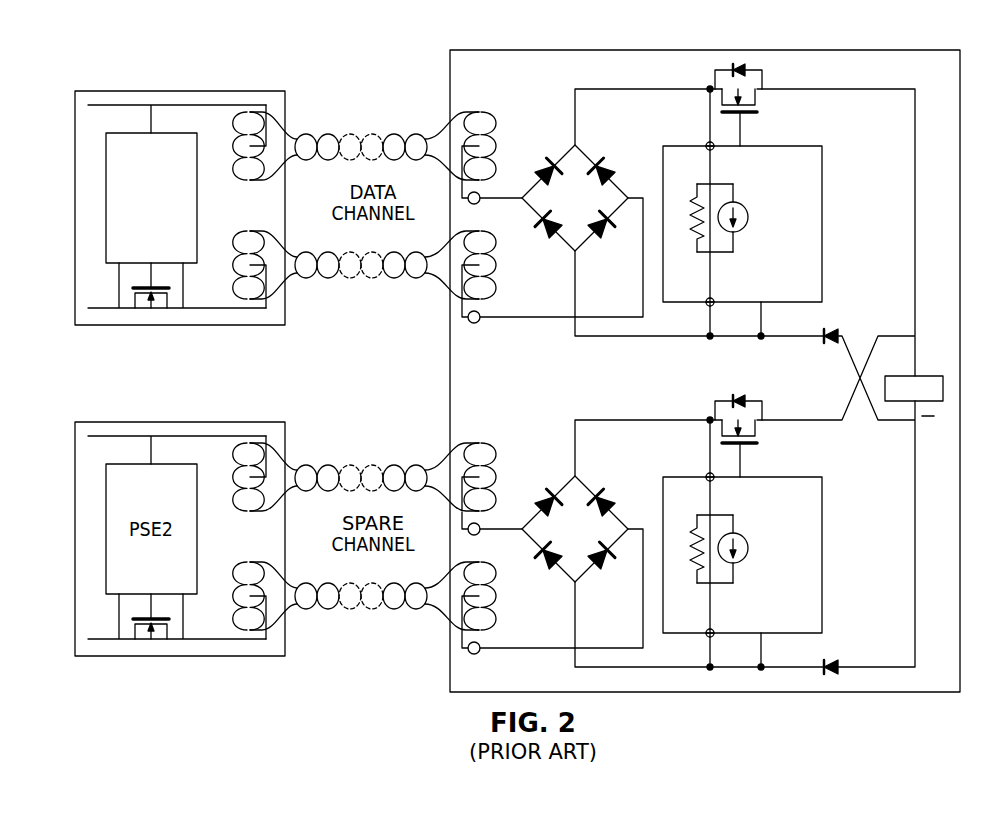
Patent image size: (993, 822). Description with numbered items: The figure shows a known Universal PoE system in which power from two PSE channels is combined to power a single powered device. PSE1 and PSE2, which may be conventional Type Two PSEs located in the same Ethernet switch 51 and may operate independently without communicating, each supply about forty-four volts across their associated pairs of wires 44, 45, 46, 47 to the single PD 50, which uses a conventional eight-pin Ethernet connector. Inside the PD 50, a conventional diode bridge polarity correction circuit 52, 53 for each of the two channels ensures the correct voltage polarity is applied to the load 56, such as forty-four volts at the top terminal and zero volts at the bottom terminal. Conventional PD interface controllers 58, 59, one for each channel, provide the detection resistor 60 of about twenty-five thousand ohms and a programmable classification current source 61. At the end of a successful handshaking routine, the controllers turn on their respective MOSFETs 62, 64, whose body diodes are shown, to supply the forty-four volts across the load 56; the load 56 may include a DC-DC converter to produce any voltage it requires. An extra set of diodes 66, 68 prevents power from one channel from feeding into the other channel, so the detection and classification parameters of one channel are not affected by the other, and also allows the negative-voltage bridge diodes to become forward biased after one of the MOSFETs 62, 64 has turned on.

The pair of wires 44 is at (361, 134).
The pair of wires 45 is at (393, 279).
The pair of wires 46 is at (364, 465).
The pair of wires 47 is at (397, 608).
The PD 50 is at (648, 50).
The Ethernet switch 51 is at (224, 91).
The diode bridge polarity correction circuit 52 is at (538, 135).
The diode bridge polarity correction circuit 53 is at (540, 466).
The load 56 is at (904, 376).
The PD interface controller 58 is at (764, 194).
The PD interface controller 59 is at (764, 525).
The detection resistor 60 is at (697, 200).
The programmable classification current source 61 is at (748, 219).
The MOSFET 62 is at (757, 102).
The MOSFET 64 is at (757, 433).
The diode 66 is at (833, 329).
The diode 68 is at (835, 659).